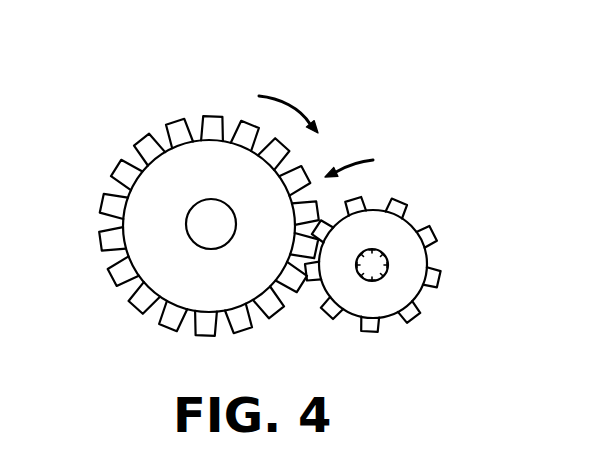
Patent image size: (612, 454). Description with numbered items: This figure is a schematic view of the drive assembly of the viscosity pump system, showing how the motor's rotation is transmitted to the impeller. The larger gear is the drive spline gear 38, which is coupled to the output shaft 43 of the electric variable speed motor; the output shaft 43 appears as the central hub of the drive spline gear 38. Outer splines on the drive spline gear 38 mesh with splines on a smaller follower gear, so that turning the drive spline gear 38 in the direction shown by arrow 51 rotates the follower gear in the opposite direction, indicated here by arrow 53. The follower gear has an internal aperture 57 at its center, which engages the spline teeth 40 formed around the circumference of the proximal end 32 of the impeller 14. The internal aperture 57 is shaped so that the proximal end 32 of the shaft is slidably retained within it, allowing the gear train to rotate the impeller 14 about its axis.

The proximal end 32 is at (124, 349).
The drive spline gear 38 is at (183, 158).
The output shaft 43 is at (222, 215).
The internal aperture 57 is at (377, 253).
The spline teeth 40 is at (380, 278).
The impeller 14 is at (370, 265).
The arrow 51 is at (283, 97).
The rotation direction arrow 53 is at (343, 165).